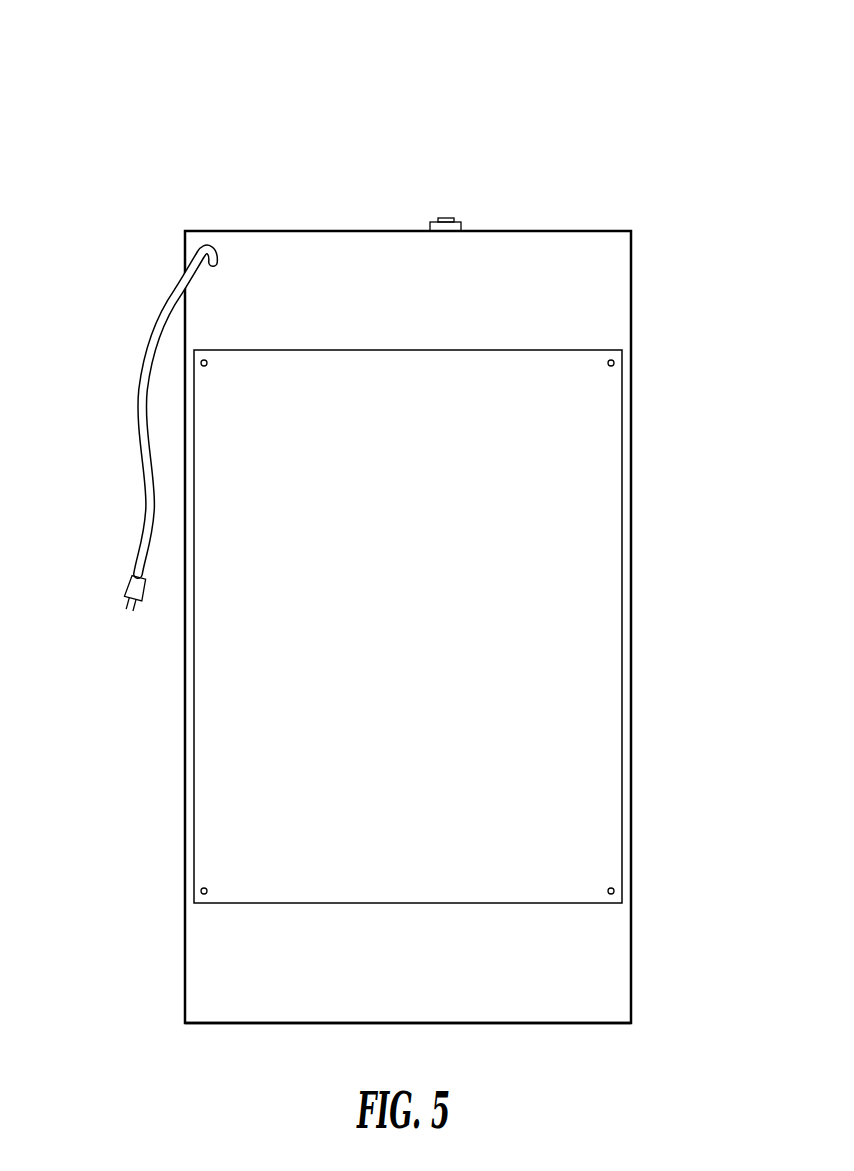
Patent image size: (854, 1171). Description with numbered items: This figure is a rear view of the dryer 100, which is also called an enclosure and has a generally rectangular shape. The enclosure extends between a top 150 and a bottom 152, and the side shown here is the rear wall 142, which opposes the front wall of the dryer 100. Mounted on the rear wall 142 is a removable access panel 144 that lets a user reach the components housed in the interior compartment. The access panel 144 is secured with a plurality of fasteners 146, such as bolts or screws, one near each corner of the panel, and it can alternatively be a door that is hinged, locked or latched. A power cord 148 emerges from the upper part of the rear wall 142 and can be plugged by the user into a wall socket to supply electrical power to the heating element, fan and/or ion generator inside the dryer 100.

The dryer 100 is at (148, 125).
The rear wall 142 is at (603, 276).
The access panel 144 is at (604, 491).
The fasteners 146 is at (614, 888).
The power cord 148 is at (145, 508).
The top 150 is at (533, 231).
The bottom 152 is at (578, 1025).